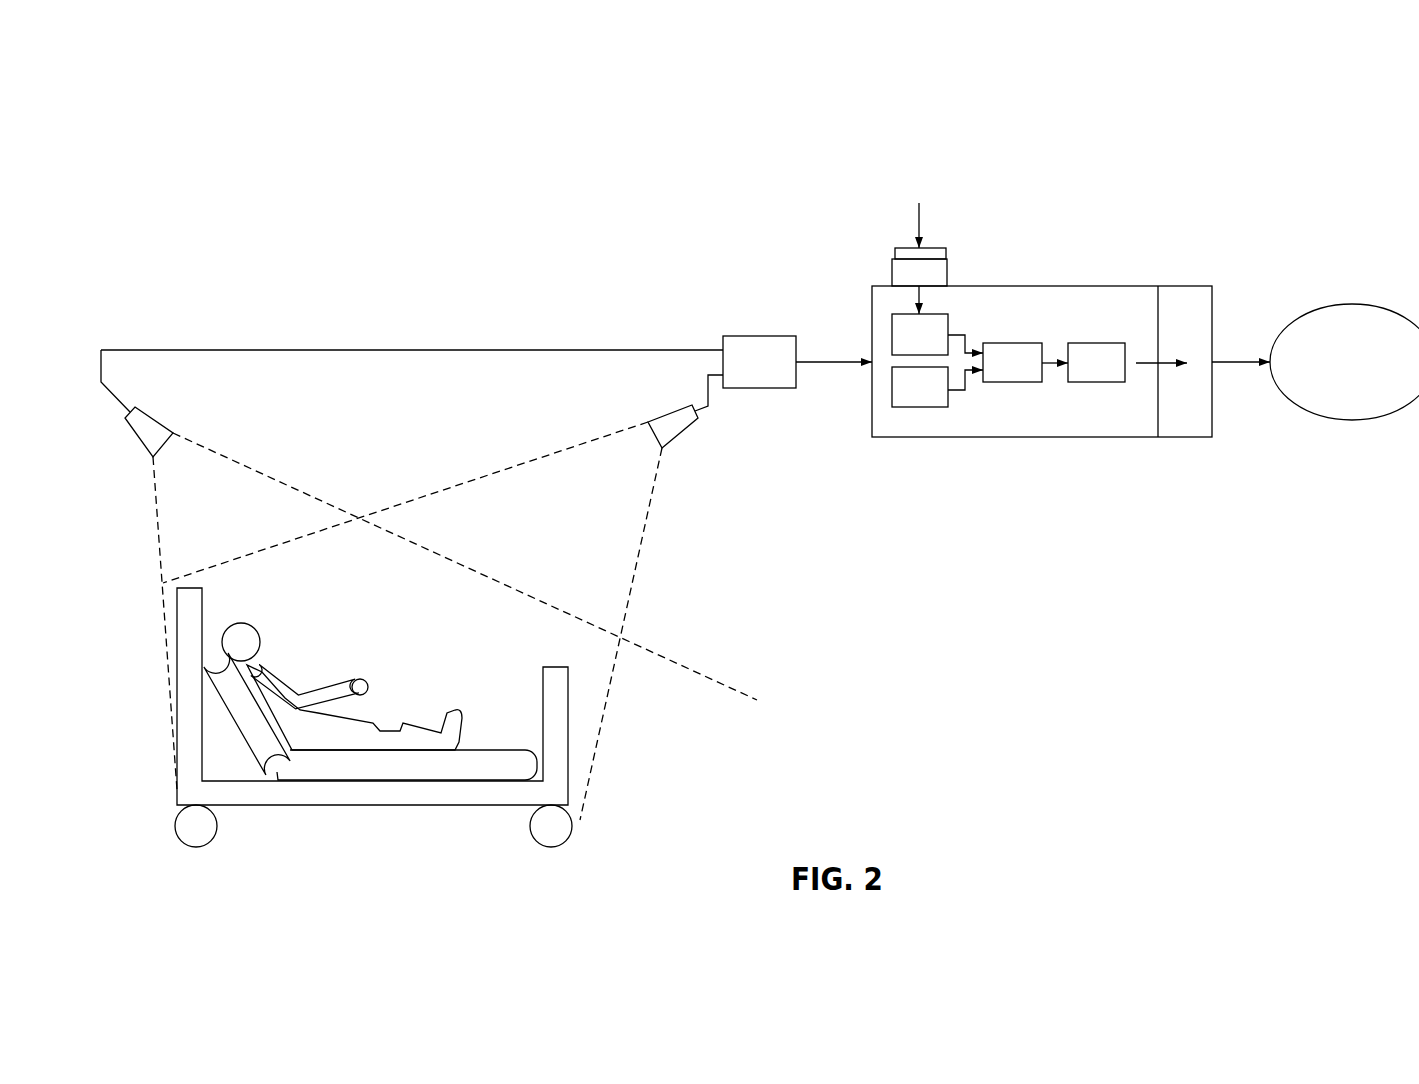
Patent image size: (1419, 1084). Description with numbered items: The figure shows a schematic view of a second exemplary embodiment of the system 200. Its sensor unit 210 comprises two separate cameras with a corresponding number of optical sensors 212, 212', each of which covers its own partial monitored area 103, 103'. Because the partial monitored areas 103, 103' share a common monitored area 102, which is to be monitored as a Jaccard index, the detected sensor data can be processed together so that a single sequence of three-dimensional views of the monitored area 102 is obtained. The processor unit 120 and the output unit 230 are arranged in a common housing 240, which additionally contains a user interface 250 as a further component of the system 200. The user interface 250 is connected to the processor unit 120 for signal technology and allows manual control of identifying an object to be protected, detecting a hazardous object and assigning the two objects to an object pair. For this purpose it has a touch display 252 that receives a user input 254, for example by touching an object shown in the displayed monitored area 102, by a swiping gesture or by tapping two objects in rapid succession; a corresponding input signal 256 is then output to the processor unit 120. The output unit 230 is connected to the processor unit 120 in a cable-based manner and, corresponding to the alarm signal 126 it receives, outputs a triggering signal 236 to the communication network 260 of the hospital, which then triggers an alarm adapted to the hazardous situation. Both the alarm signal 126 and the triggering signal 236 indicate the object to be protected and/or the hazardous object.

The system 200 is at (1323, 238).
The sensor unit 210 is at (755, 335).
The optical sensor 212 is at (119, 450).
The optical sensor 212' is at (694, 455).
The partial monitored area 103 is at (411, 611).
The partial monitored area 103' is at (451, 621).
The monitored area 102 is at (575, 645).
The housing 240 is at (989, 438).
The output unit 230 is at (1180, 302).
The processor unit 120 is at (1060, 422).
The alarm signal 126 is at (1148, 358).
The triggering signal 236 is at (1232, 363).
The communication network 260 is at (1344, 362).
The touch display 252 is at (946, 255).
The user interface 250 is at (947, 278).
The user input 254 is at (920, 222).
The input signal 256 is at (918, 300).